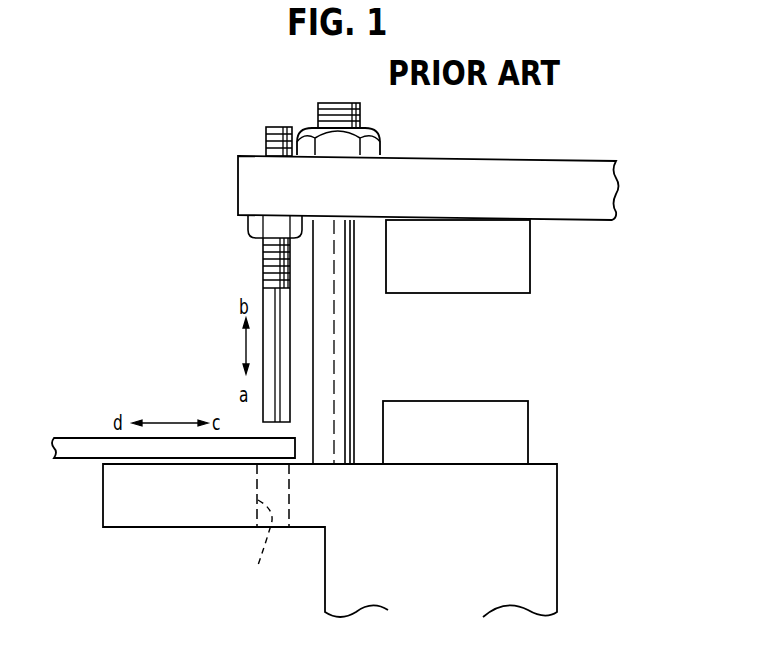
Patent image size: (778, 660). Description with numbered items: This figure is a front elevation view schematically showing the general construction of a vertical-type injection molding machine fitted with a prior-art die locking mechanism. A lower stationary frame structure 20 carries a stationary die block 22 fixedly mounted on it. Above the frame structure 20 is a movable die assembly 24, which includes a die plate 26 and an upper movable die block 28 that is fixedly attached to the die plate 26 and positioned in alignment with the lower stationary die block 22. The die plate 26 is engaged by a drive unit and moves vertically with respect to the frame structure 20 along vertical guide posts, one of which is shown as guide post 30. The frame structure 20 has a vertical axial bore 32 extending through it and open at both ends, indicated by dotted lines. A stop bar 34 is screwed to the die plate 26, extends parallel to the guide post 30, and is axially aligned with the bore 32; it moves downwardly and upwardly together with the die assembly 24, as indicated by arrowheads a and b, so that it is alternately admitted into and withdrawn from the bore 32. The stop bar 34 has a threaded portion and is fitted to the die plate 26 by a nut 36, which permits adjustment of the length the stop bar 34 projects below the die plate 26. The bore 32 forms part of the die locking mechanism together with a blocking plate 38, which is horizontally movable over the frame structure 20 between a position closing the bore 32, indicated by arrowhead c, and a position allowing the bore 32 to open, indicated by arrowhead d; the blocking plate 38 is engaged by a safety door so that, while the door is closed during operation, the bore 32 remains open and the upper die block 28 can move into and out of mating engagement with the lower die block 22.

The lower stationary frame structure 20 is at (456, 550).
The stationary die block 22 is at (528, 438).
The movable die assembly 24 is at (592, 235).
The die plate 26 is at (503, 158).
The upper movable die block 28 is at (530, 280).
The vertical guide post 30 is at (354, 343).
The vertical axial bore 32 is at (266, 533).
The stop bar 34 is at (263, 280).
The nut 36 is at (250, 230).
The blocking plate 38 is at (87, 438).